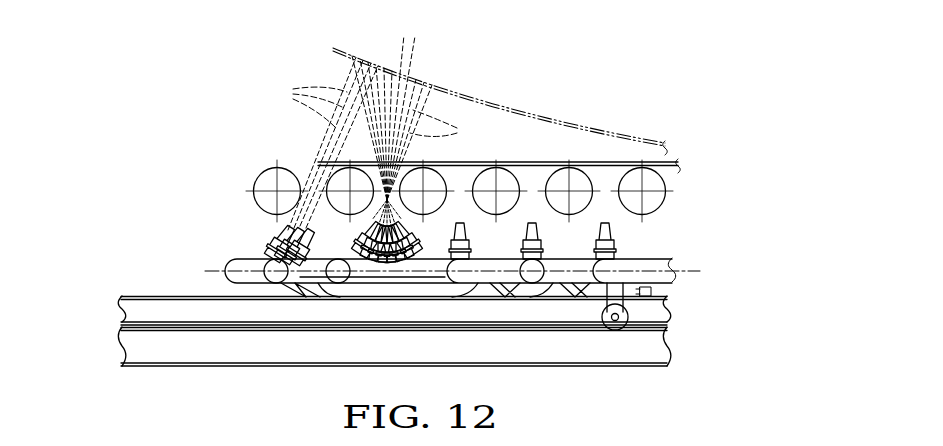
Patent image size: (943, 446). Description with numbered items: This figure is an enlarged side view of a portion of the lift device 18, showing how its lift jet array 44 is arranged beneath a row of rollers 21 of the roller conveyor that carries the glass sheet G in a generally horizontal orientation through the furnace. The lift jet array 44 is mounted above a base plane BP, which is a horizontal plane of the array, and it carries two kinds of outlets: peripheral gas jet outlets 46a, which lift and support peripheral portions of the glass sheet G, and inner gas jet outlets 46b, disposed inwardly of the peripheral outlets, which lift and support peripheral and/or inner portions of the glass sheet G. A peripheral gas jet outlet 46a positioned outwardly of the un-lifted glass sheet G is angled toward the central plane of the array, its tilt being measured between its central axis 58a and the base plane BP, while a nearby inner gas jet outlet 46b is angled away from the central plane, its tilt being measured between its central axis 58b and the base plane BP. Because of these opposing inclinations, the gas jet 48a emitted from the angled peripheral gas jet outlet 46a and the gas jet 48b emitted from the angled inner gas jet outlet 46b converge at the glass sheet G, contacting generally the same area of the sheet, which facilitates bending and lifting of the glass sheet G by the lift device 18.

The lift device 18 is at (209, 119).
The rollers 21 is at (663, 183).
The lift jet array 44 is at (643, 240).
The peripheral gas jet outlets 46a is at (372, 242).
The inner gas jet outlets 46b is at (405, 240).
The gas jet 48a is at (301, 143).
The central axis 58a is at (469, 125).
The gas jet 48b is at (387, 141).
The central axis 58b is at (417, 47).
The glass sheet G is at (500, 107).
The base plane BP is at (698, 273).